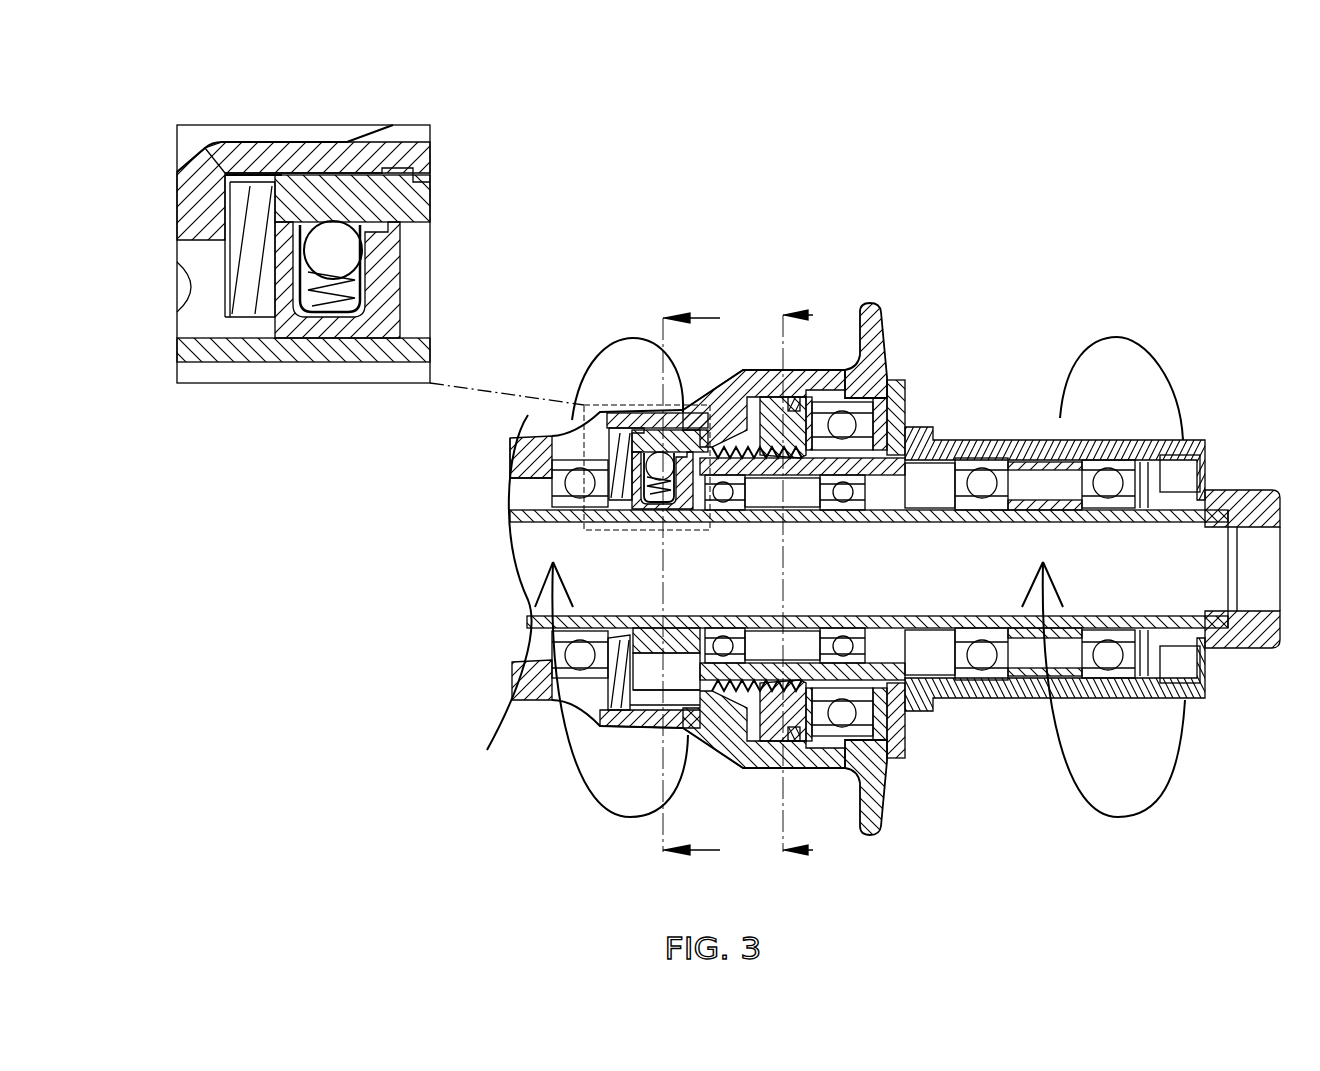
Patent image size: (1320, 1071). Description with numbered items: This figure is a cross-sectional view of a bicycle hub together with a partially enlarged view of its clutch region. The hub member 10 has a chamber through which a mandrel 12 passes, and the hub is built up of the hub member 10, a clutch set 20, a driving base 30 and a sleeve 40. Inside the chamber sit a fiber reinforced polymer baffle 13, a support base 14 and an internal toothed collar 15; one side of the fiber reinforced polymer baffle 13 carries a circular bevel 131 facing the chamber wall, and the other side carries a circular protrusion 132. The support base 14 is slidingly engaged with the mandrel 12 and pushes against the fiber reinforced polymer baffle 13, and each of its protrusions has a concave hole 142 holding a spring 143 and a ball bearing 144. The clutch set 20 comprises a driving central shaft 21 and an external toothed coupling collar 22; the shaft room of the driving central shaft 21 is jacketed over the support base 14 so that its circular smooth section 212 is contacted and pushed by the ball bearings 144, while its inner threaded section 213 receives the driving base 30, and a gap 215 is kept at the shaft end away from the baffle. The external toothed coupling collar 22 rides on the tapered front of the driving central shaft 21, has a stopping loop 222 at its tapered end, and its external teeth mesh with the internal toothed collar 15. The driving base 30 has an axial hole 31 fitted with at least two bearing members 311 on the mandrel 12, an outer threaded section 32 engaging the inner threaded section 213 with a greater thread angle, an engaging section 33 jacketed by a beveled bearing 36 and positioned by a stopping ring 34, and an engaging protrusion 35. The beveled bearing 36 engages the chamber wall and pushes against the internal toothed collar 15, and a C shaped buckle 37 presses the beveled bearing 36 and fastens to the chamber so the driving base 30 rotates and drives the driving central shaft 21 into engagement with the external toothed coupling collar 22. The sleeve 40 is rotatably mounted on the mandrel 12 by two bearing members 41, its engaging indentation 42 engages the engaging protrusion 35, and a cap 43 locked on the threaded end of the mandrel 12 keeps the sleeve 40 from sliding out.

The hub member 10 is at (705, 481).
The mandrel 12 is at (1000, 628).
The fiber reinforced polymer baffle 13 is at (626, 470).
The circular bevel 131 is at (210, 232).
The circular protrusion 132 is at (270, 197).
The support base 14 is at (280, 278).
The concave hole 142 is at (315, 322).
The spring 143 is at (348, 300).
The ball bearing 144 is at (332, 226).
The internal toothed collar 15 is at (797, 400).
The clutch set 20 is at (698, 422).
The driving central shaft 21 is at (735, 440).
The circular smooth section 212 is at (353, 207).
The inner threaded section 213 is at (716, 690).
The gap 215 is at (257, 257).
The external toothed coupling collar 22 is at (770, 410).
The stopping loop 222 is at (805, 447).
The driving base 30 is at (772, 700).
The axial hole 31 is at (940, 660).
The bearing members 311 is at (872, 660).
The outer threaded section 32 is at (735, 690).
The engaging section 33 is at (848, 712).
The stopping ring 34 is at (882, 765).
The engaging protrusion 35 is at (898, 420).
The beveled bearing 36 is at (852, 725).
The C shaped buckle 37 is at (865, 373).
The sleeve 40 is at (1055, 527).
The bearing members 41 is at (982, 470).
The engaging indentation 42 is at (915, 440).
The cap 43 is at (1256, 505).